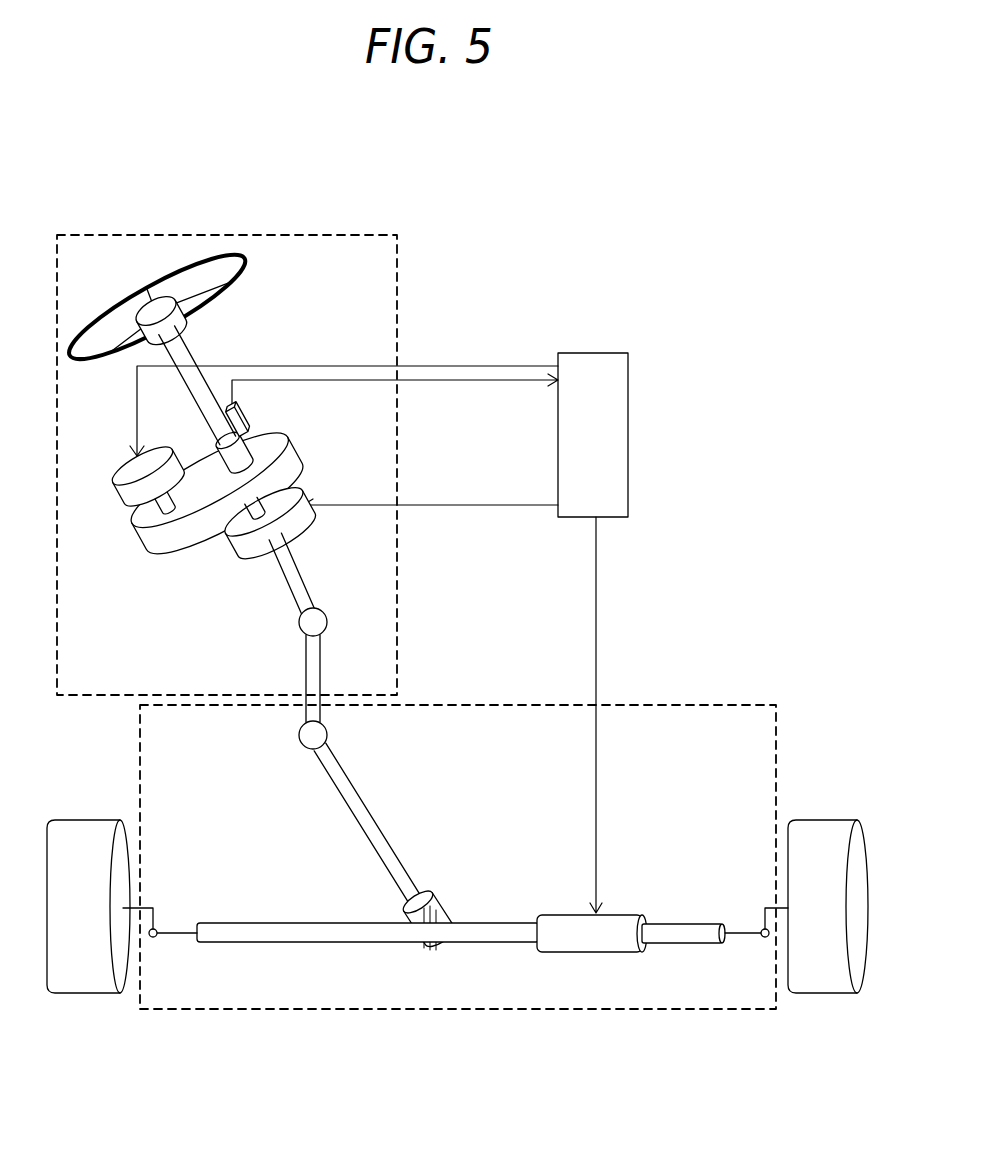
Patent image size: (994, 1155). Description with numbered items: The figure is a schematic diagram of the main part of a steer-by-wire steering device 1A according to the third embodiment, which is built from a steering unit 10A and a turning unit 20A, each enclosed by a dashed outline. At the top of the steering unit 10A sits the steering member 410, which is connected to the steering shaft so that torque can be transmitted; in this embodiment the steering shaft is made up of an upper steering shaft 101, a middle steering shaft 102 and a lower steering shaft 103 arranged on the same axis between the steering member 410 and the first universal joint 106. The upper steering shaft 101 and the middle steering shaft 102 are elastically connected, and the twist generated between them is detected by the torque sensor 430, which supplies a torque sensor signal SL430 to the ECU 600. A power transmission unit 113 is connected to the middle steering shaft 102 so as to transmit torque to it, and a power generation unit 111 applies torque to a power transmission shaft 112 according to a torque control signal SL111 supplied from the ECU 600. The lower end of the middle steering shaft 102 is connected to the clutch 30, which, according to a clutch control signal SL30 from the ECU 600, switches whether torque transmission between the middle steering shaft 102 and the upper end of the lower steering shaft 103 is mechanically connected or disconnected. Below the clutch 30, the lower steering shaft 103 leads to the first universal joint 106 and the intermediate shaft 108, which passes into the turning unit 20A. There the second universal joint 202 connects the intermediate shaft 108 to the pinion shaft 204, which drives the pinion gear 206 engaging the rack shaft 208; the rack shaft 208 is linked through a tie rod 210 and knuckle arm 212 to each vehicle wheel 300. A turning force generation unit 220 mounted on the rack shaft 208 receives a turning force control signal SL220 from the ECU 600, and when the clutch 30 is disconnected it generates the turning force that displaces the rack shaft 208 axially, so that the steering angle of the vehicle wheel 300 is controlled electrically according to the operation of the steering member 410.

The steering device 1A is at (688, 287).
The steering unit 10A is at (57, 487).
The turning unit 20A is at (140, 745).
The steering member 410 is at (250, 266).
The torque sensor 430 is at (247, 423).
The upper steering shaft 101 is at (200, 412).
The middle steering shaft 102 is at (228, 449).
The lower steering shaft 103 is at (294, 568).
The first universal joint 106 is at (328, 620).
The intermediate shaft 108 is at (321, 671).
The power generation unit 111 is at (130, 468).
The power transmission shaft 112 is at (155, 505).
The power transmission unit 113 is at (297, 455).
The clutch 30 is at (232, 545).
The second universal joint 202 is at (328, 735).
The pinion shaft 204 is at (377, 826).
The pinion gear 206 is at (435, 905).
The rack shaft 208 is at (485, 943).
The tie rod 210 is at (178, 940).
The knuckle arm 212 is at (156, 915).
The turning force generation unit 220 is at (590, 953).
The vehicle wheel 300 is at (88, 820).
The ECU 600 is at (630, 437).
The torque control signal SL111 is at (344, 397).
The torque sensor signal SL430 is at (395, 392).
The clutch control signal SL30 is at (430, 493).
The turning force control signal SL220 is at (626, 715).